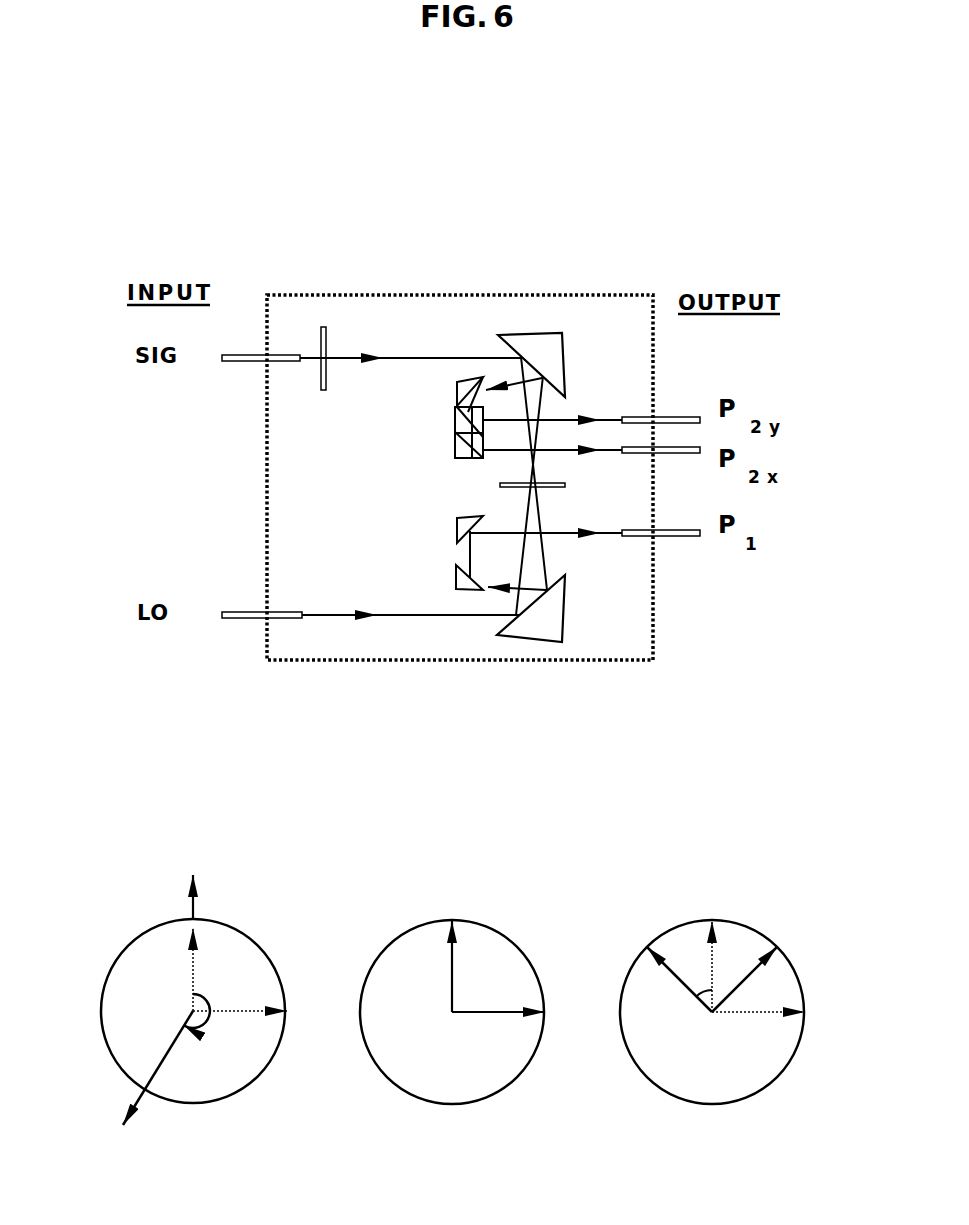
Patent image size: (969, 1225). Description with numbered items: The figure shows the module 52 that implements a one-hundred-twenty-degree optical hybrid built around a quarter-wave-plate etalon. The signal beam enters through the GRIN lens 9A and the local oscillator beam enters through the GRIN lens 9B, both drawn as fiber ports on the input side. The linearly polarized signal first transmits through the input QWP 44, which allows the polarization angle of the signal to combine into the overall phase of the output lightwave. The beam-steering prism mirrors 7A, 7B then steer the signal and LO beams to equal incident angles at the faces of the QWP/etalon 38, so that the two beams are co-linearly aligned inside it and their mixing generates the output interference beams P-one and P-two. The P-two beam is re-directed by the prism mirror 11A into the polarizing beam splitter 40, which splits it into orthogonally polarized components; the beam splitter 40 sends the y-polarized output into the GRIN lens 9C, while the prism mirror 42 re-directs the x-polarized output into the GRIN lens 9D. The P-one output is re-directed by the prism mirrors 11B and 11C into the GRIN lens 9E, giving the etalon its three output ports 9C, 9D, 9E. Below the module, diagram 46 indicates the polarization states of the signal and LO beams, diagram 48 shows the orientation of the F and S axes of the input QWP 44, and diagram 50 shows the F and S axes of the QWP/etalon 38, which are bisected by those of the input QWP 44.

The beam-steering prism mirror 7A is at (566, 357).
The beam-steering prism mirror 7B is at (566, 613).
The GRIN lens 9A is at (236, 363).
The GRIN lens 9B is at (231, 611).
The GRIN lens 9C is at (633, 417).
The GRIN lens 9D is at (638, 455).
The GRIN lens 9E is at (636, 538).
The prism mirror 11A is at (457, 387).
The prism mirror 11B is at (455, 578).
The prism mirror 11C is at (456, 530).
The QWP/etalon 38 is at (565, 483).
The polarizing beam splitter 40 is at (455, 422).
The prism mirror 42 is at (456, 452).
The input QWP 44 is at (323, 390).
The polarization state diagram 46 is at (112, 1061).
The input QWP axis diagram 48 is at (372, 1060).
The QWP/etalon axis diagram 50 is at (636, 1060).
The module 52 is at (448, 661).